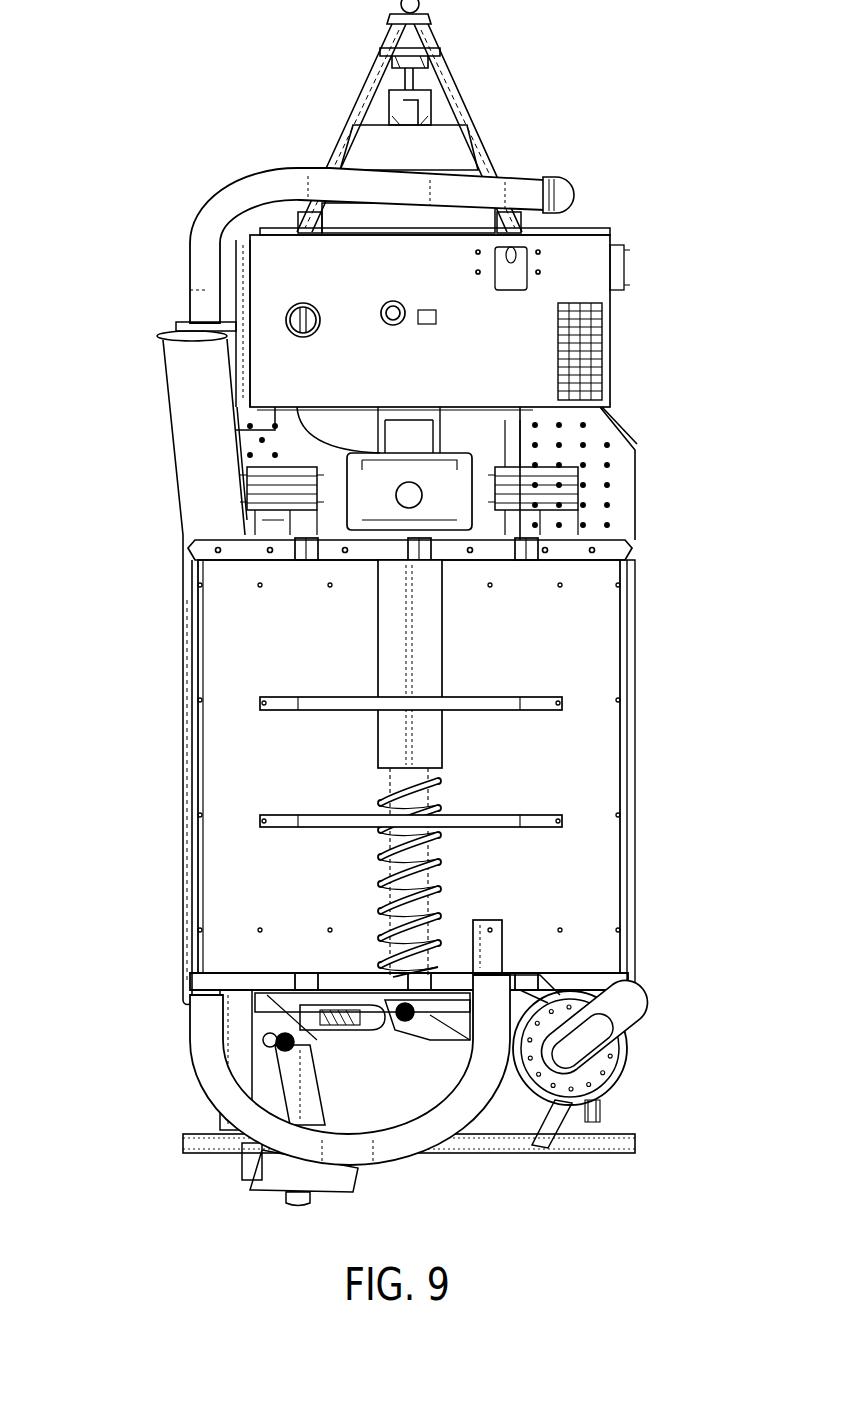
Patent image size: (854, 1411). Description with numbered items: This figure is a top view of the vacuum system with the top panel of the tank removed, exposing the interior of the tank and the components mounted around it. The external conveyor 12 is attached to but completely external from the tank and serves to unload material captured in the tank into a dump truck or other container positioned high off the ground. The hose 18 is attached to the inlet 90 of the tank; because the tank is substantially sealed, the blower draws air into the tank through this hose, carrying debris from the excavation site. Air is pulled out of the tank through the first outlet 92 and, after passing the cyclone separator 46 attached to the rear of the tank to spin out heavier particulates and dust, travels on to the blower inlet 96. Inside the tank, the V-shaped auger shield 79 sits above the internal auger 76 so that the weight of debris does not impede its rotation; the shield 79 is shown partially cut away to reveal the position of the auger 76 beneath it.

The hose 18 is at (365, 232).
The external conveyor 12 is at (152, 663).
The blower inlet 96 is at (281, 454).
The auger shield 79 is at (511, 693).
The internal auger 76 is at (254, 872).
The inlet 90 is at (603, 893).
The first outlet 92 is at (623, 937).
The cyclone separator 46 is at (617, 1064).